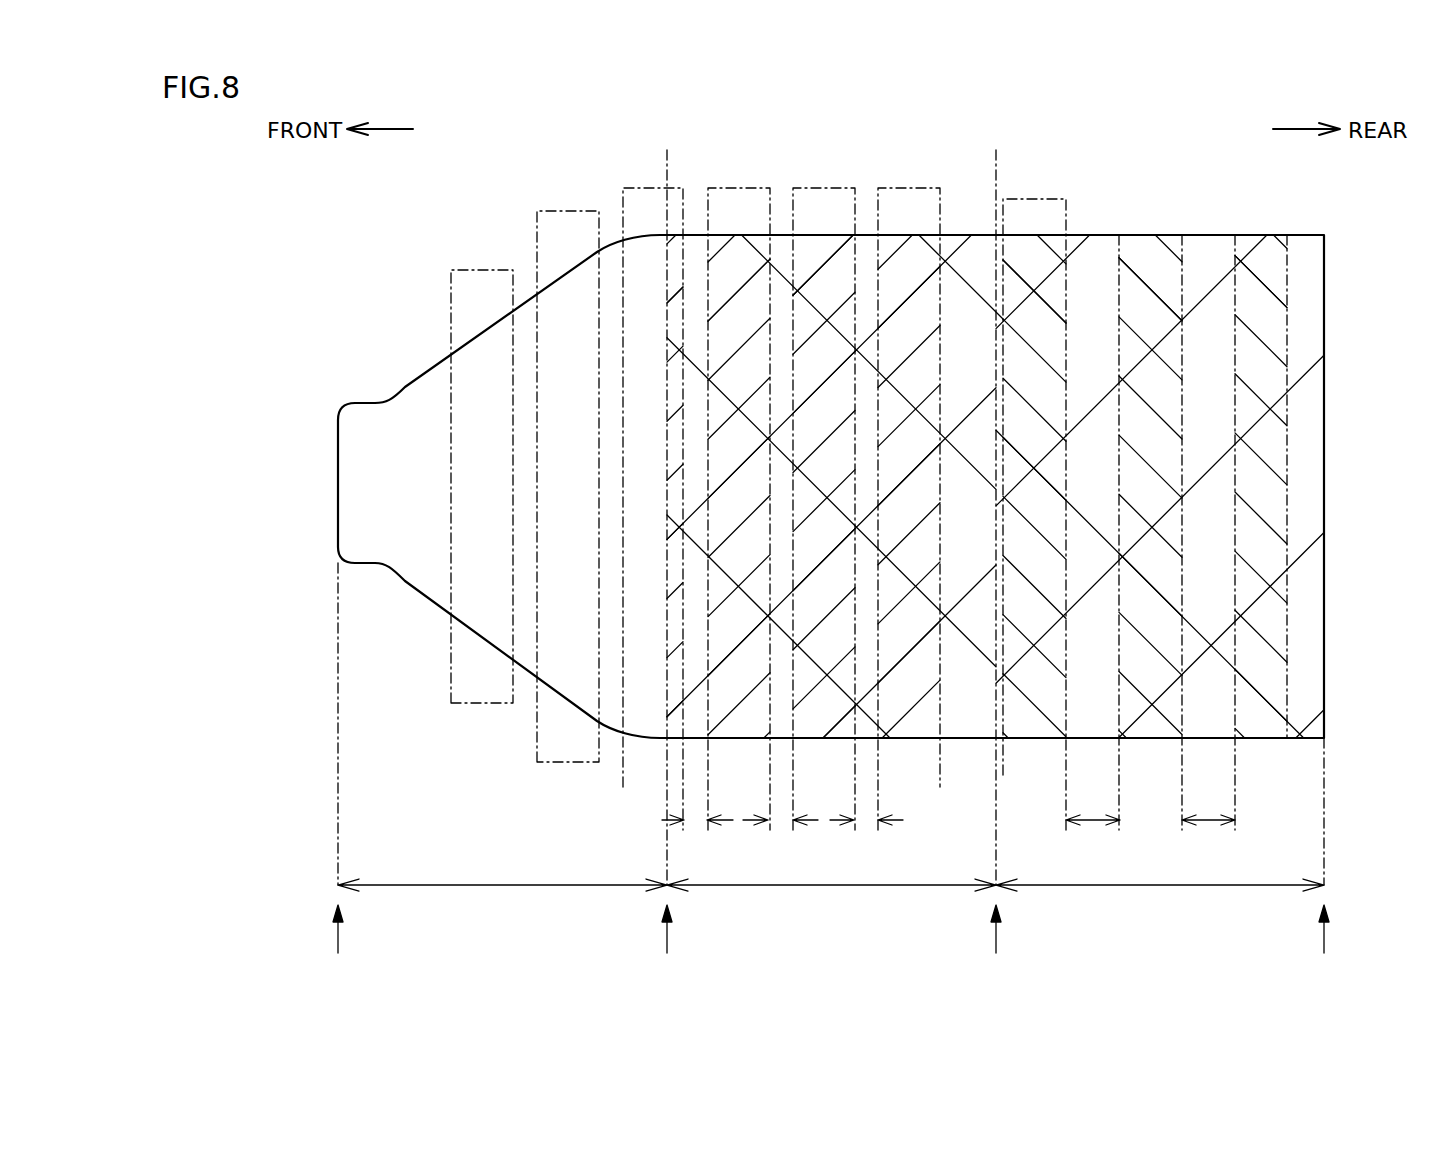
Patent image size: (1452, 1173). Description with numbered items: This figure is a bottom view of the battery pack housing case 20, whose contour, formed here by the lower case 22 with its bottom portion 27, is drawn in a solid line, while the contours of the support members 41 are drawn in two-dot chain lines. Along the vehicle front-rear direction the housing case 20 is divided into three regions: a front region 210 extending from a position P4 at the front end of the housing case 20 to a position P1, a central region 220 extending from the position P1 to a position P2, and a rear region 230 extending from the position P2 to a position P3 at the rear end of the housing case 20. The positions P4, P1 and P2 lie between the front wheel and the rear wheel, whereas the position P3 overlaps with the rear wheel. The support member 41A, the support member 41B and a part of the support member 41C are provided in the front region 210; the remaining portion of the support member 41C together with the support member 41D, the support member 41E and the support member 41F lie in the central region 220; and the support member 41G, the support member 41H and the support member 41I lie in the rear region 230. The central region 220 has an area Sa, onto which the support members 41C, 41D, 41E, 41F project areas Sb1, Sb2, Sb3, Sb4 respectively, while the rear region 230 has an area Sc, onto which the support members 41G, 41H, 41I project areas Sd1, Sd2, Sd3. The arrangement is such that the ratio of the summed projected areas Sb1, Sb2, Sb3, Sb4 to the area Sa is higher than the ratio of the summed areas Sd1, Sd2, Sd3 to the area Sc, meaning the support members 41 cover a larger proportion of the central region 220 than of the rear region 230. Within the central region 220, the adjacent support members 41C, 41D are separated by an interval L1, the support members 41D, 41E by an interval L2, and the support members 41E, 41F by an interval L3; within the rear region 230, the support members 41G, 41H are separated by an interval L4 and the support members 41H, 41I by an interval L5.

The housing case 20 is at (859, 451).
The lower case 22 is at (1306, 235).
The bottom portion 27 is at (1089, 245).
The support members 41 is at (863, 469).
The support member 41A is at (462, 268).
The support member 41B is at (553, 208).
The support member 41C is at (637, 185).
The support member 41D is at (733, 185).
The support member 41E is at (826, 185).
The support member 41F is at (904, 185).
The support member 41G is at (1018, 196).
The support member 41H is at (1135, 228).
The support member 41I is at (1253, 228).
The front region 210 is at (503, 888).
The central region 220 is at (833, 888).
The rear region 230 is at (1160, 888).
The interval L1 is at (695, 822).
The interval L2 is at (779, 822).
The interval L3 is at (865, 822).
The interval L4 is at (1090, 822).
The interval L5 is at (1207, 822).
The position P1 is at (666, 565).
The position P2 is at (995, 565).
The position P3 is at (1323, 859).
The position P4 is at (337, 772).
The area Sa is at (963, 250).
The area Sb1 is at (677, 253).
The area Sb2 is at (750, 253).
The area Sb3 is at (833, 253).
The area Sb4 is at (918, 253).
The area Sc is at (1313, 292).
The area Sd1 is at (1040, 253).
The area Sd2 is at (1160, 250).
The area Sd3 is at (1275, 250).